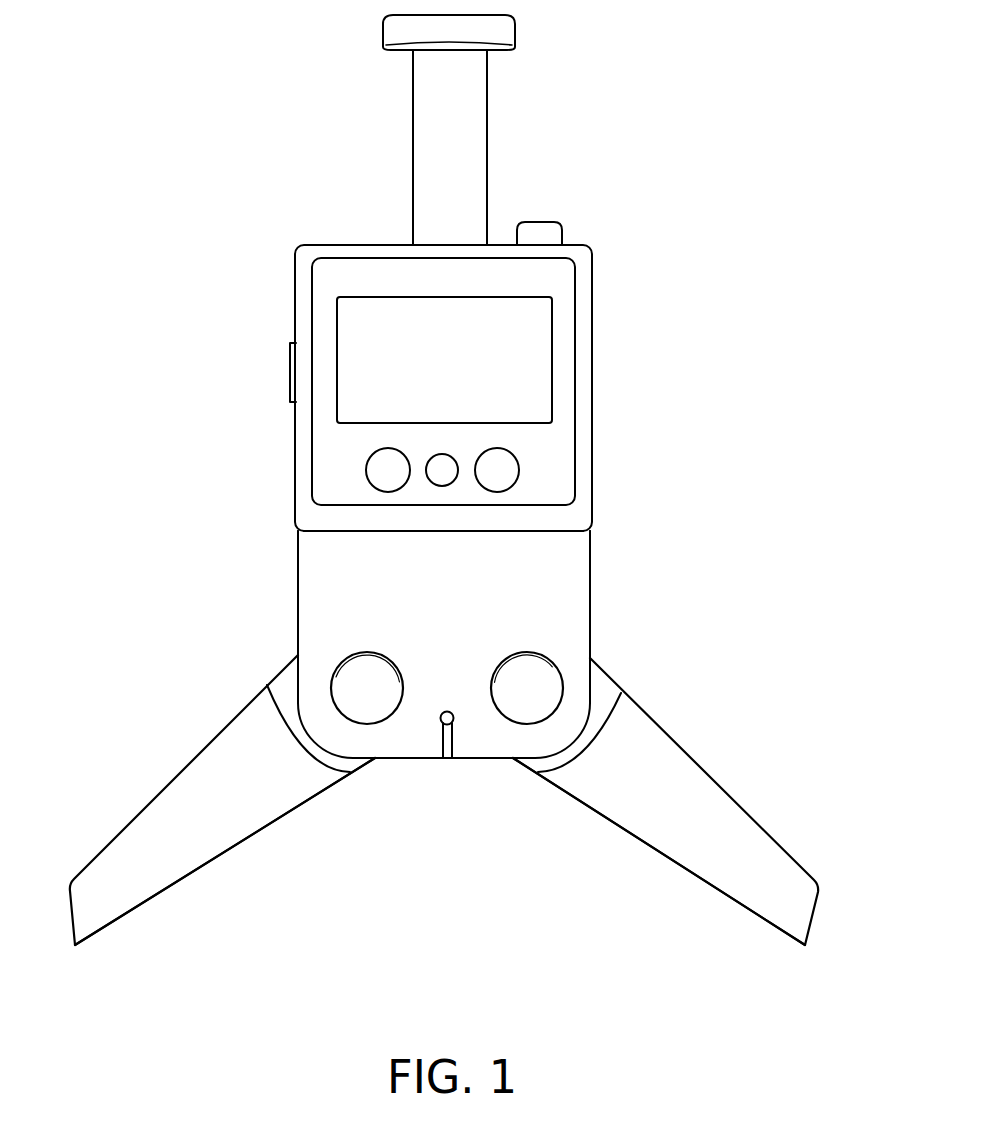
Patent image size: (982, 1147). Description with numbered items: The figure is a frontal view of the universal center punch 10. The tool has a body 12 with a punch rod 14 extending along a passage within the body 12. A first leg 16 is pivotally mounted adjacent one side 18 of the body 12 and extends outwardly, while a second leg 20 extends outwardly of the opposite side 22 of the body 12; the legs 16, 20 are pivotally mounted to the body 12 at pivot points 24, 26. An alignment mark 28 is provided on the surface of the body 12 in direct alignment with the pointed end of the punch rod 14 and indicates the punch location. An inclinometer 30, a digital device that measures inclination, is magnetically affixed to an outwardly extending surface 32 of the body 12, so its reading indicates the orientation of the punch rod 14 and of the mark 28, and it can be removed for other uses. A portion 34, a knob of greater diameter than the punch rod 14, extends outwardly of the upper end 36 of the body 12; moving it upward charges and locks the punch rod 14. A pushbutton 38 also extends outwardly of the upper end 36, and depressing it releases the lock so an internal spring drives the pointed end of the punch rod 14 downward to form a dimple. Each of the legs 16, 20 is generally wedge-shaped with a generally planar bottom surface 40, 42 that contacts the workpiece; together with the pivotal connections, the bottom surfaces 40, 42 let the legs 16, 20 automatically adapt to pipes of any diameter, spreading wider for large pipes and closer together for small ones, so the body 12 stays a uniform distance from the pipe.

The universal center punch 10 is at (650, 205).
The body 12 is at (590, 565).
The punch rod 14 is at (487, 117).
The first leg 16 is at (191, 776).
The one side of the body 18 is at (299, 572).
The second leg 20 is at (688, 768).
The opposite side of the body 22 is at (590, 622).
The pivot point 24 is at (378, 725).
The pivot point 26 is at (515, 725).
The alignment mark 28 is at (447, 760).
The inclinometer 30 is at (575, 393).
The outwardly extending surface 32 is at (590, 525).
The portion 34 is at (515, 30).
The upper end of the body 36 is at (338, 243).
The pushbutton 38 is at (538, 221).
The bottom surface 40 is at (200, 867).
The bottom surface 42 is at (682, 852).